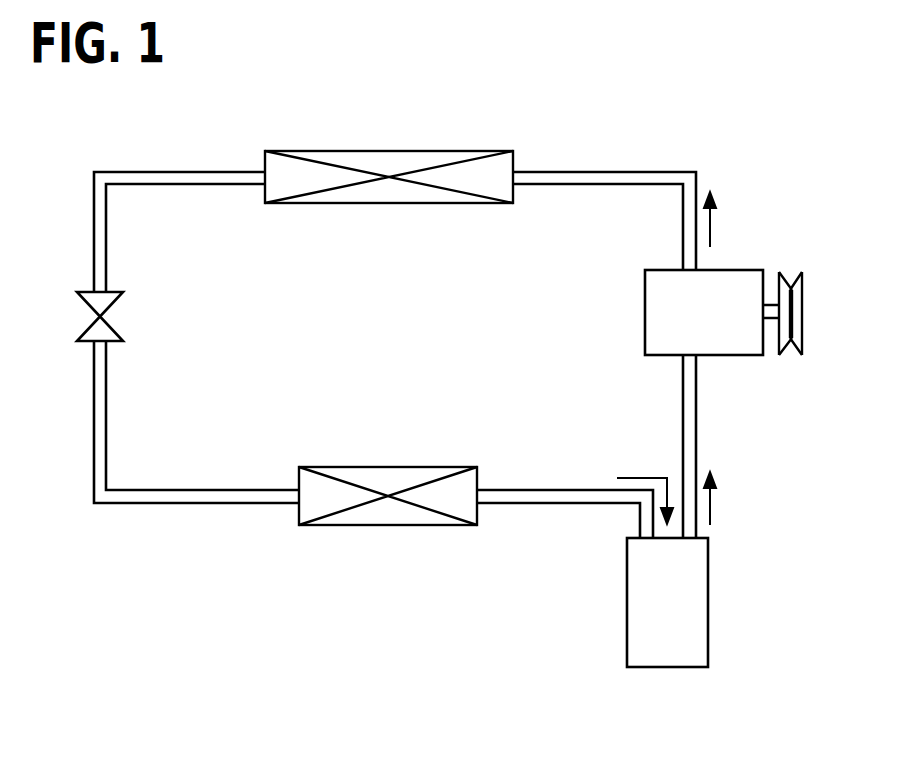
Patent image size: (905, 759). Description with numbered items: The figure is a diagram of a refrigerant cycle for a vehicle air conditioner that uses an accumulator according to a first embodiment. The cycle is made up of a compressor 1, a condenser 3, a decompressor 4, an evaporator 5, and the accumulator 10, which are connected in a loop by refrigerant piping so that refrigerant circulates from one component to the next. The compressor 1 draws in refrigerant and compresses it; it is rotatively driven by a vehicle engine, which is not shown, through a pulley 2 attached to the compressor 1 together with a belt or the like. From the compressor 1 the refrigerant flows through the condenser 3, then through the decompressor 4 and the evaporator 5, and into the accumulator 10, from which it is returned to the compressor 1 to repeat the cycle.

The compressor 1 is at (729, 277).
The pulley 2 is at (803, 285).
The condenser 3 is at (424, 158).
The decompressor 4 is at (83, 343).
The evaporator 5 is at (385, 515).
The accumulator 10 is at (708, 598).